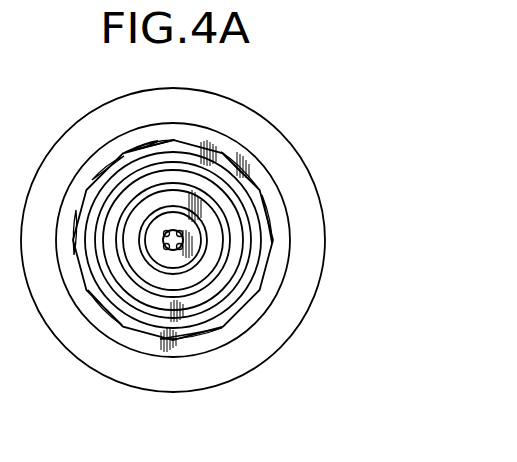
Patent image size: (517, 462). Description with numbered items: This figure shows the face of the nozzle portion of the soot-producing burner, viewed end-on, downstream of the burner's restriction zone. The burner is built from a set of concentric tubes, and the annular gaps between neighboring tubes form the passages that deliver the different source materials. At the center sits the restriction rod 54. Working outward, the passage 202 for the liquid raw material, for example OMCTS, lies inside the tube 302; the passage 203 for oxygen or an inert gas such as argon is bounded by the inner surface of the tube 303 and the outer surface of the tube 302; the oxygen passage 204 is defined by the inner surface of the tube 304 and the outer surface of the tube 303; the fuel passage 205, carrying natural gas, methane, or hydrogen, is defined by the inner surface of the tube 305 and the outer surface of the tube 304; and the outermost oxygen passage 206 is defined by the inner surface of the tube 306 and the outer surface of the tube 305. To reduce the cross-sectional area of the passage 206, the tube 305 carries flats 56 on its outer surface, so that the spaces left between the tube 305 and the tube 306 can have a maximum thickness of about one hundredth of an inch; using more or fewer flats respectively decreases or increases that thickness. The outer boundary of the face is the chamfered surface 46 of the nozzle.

The chamfered surface of nozzle 46 is at (208, 370).
The restriction rod 54 is at (177, 250).
The flats on tube 56 is at (143, 145).
The passage 202 is at (160, 230).
The passage 203 is at (165, 250).
The passage 204 is at (170, 293).
The passage 205 is at (217, 330).
The passage 206 is at (232, 335).
The tube 302 is at (173, 223).
The tube 303 is at (208, 223).
The tube 304 is at (233, 247).
The tube 305 is at (262, 277).
The tube 306 is at (245, 327).